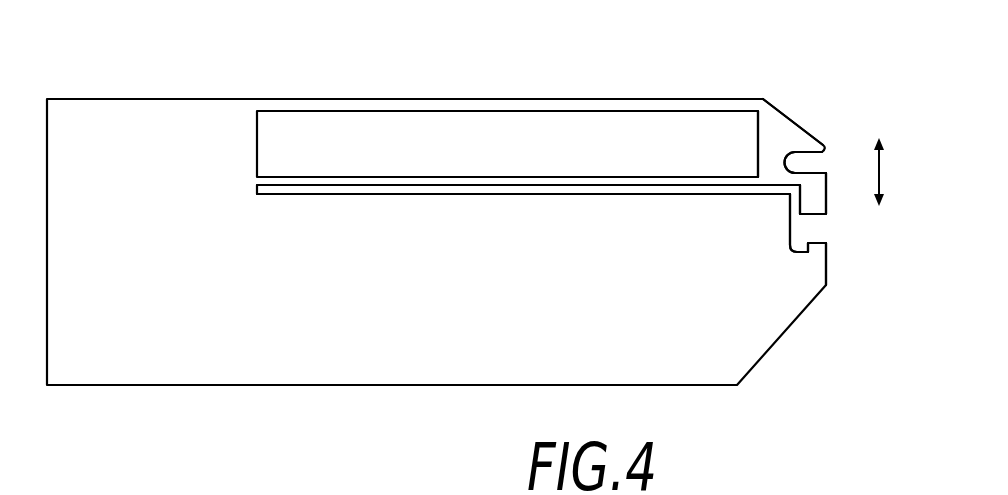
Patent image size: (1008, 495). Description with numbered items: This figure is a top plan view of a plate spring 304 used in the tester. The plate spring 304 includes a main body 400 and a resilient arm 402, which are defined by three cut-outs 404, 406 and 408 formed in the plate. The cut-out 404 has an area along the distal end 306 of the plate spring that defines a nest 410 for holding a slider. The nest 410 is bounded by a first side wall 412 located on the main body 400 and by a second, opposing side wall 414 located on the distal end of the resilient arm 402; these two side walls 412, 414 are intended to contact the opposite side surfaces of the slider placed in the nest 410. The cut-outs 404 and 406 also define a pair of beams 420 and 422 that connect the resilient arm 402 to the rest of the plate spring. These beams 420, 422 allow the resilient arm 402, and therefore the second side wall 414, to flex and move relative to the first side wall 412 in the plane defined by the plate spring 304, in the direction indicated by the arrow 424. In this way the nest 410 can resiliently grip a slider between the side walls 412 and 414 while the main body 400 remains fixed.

The plate spring 304 is at (183, 91).
The distal end 306 is at (785, 112).
The main body 400 is at (722, 329).
The resilient arm 402 is at (700, 100).
The cut-out 404 is at (587, 193).
The cut-out 406 is at (727, 128).
The cut-out 408 is at (812, 162).
The nest 410 is at (817, 229).
The first side wall 412 is at (813, 244).
The second side wall 414 is at (807, 208).
The beam 420 is at (543, 181).
The beam 422 is at (540, 100).
The arrow 424 is at (881, 161).